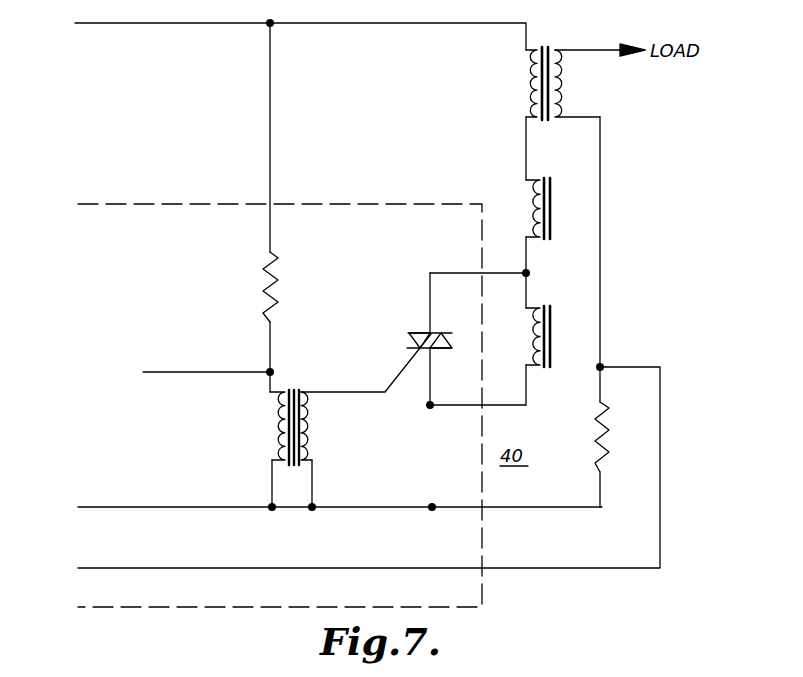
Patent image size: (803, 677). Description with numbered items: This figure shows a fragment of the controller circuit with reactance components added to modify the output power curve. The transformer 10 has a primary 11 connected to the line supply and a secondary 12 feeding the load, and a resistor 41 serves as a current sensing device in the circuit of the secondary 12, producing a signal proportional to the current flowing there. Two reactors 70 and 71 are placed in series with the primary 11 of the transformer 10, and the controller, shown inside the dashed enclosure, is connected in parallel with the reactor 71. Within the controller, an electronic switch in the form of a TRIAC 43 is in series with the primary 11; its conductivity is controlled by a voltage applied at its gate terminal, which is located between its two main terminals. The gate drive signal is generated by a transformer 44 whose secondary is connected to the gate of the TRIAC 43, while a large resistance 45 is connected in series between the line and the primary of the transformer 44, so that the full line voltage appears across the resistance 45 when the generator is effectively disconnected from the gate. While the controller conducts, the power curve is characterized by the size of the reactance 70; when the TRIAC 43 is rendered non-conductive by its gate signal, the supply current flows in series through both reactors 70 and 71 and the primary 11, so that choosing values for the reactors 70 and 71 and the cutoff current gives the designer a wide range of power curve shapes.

The transformer 10 is at (544, 66).
The primary 11 is at (526, 82).
The secondary 12 is at (568, 85).
The reactor 70 is at (545, 177).
The reactor 71 is at (545, 305).
The resistor 41 is at (609, 437).
The large resistance 45 is at (278, 286).
The transformer 44 is at (293, 392).
The electronic switch 43 is at (398, 312).